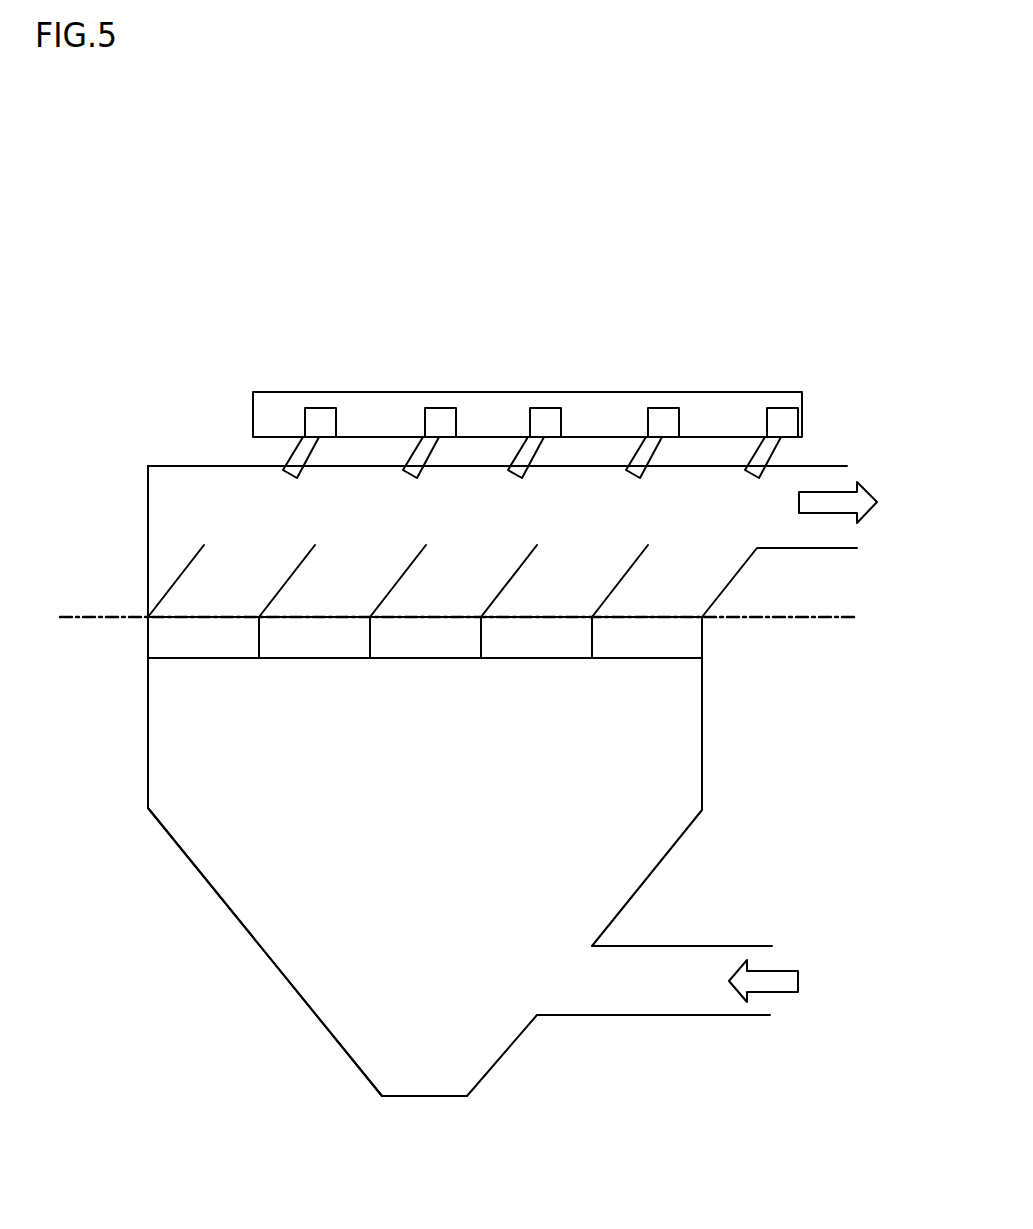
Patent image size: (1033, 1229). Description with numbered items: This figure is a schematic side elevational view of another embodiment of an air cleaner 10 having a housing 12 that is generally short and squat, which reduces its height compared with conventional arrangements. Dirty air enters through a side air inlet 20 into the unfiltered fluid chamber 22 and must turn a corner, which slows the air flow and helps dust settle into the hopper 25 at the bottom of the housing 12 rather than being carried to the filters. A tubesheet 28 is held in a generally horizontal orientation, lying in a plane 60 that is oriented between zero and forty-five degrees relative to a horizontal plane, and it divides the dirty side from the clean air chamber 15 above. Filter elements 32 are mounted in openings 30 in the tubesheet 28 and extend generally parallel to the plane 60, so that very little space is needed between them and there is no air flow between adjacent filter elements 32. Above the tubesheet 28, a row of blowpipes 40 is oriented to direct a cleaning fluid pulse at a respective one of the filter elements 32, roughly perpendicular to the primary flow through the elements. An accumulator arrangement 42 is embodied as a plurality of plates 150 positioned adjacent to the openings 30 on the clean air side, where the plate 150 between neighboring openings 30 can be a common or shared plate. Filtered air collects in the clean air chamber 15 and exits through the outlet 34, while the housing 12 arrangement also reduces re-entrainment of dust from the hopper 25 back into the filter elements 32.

The air cleaner 10 is at (669, 330).
The housing 12 is at (148, 727).
The clean air chamber 15 is at (149, 498).
The air inlet 20 is at (770, 1016).
The unfiltered fluid chamber 22 is at (214, 889).
The hopper 25 is at (356, 1062).
The tubesheet 28 is at (687, 617).
The openings 30 is at (594, 614).
The filter elements 32 is at (204, 643).
The outlet 34 is at (847, 466).
The blowpipe 40 is at (295, 448).
The accumulator arrangement 42 is at (282, 532).
The plane 60 is at (823, 619).
The plates 150 is at (188, 573).